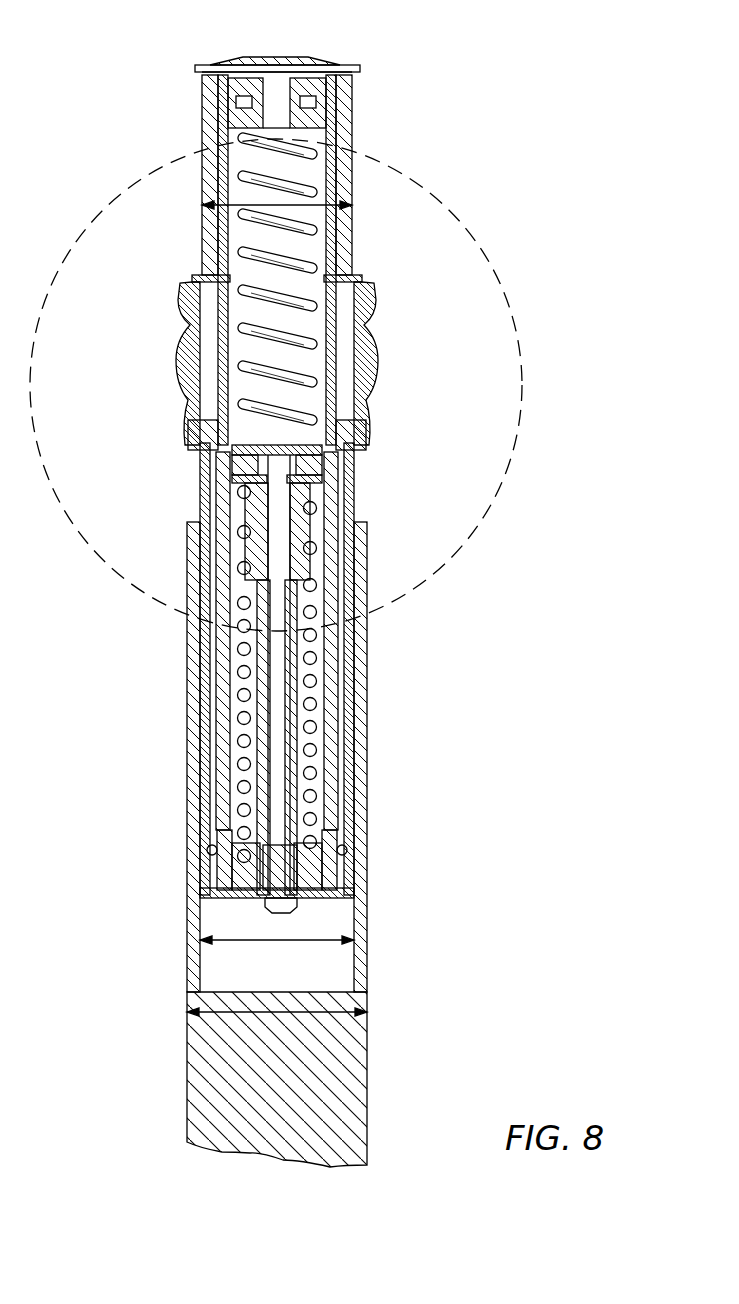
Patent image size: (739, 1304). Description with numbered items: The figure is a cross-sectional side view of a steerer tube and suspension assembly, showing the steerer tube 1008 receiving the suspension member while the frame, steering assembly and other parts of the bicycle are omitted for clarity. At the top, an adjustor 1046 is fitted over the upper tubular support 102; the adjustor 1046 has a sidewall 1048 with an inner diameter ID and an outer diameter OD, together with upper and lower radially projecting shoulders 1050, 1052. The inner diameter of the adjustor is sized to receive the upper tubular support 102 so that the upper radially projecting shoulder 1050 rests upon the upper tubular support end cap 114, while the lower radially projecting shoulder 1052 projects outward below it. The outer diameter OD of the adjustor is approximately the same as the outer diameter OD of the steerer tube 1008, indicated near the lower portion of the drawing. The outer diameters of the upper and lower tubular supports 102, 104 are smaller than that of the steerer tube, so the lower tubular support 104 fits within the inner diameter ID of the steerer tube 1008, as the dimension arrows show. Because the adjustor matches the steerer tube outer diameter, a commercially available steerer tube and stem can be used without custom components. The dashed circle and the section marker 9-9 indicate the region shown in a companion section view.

The upper radially projecting shoulder 1050 is at (335, 70).
The upper tubular support end cap 114 is at (218, 90).
The sidewall 1048 is at (343, 116).
The adjustor 1046 is at (360, 223).
The lower radially projecting shoulder 1052 is at (352, 275).
The upper tubular support 102 is at (208, 226).
The lower tubular support 104 is at (345, 768).
The steerer tube 1008 is at (367, 1105).
The outer diameter OD is at (292, 206).
The inner diameter ID is at (296, 942).
The section line 9-9 is at (463, 552).